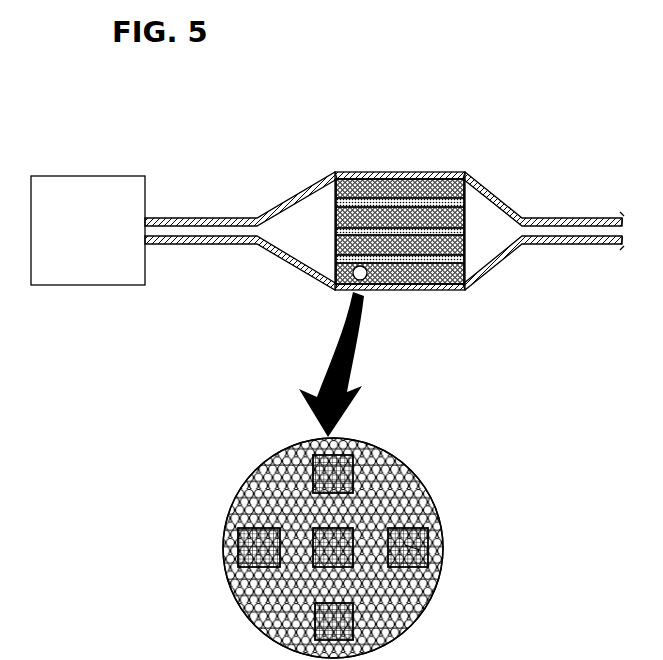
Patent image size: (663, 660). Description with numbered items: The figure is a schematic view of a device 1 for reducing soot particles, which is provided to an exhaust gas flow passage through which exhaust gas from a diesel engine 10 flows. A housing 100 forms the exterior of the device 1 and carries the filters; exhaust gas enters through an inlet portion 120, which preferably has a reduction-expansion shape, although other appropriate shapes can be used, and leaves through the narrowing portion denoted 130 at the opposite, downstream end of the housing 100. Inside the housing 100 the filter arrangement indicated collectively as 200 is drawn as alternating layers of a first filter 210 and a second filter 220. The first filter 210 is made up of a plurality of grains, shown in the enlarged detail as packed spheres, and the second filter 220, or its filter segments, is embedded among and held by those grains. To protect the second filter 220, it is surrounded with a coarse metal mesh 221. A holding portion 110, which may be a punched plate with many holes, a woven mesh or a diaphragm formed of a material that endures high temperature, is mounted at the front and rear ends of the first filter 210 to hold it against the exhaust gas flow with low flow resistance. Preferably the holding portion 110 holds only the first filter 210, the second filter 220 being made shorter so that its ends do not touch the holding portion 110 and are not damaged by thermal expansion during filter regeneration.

The device for reducing soot particles 1 is at (464, 49).
The diesel engine 10 is at (101, 176).
The housing 100 is at (471, 177).
The holding portion 110 is at (334, 222).
The inlet portion 120 is at (279, 208).
The outlet pipe 130 is at (507, 246).
The filter stack 200 is at (408, 104).
The first filter 210 is at (349, 187).
The second filter 220 is at (394, 198).
The coarse metal mesh 221 is at (425, 505).